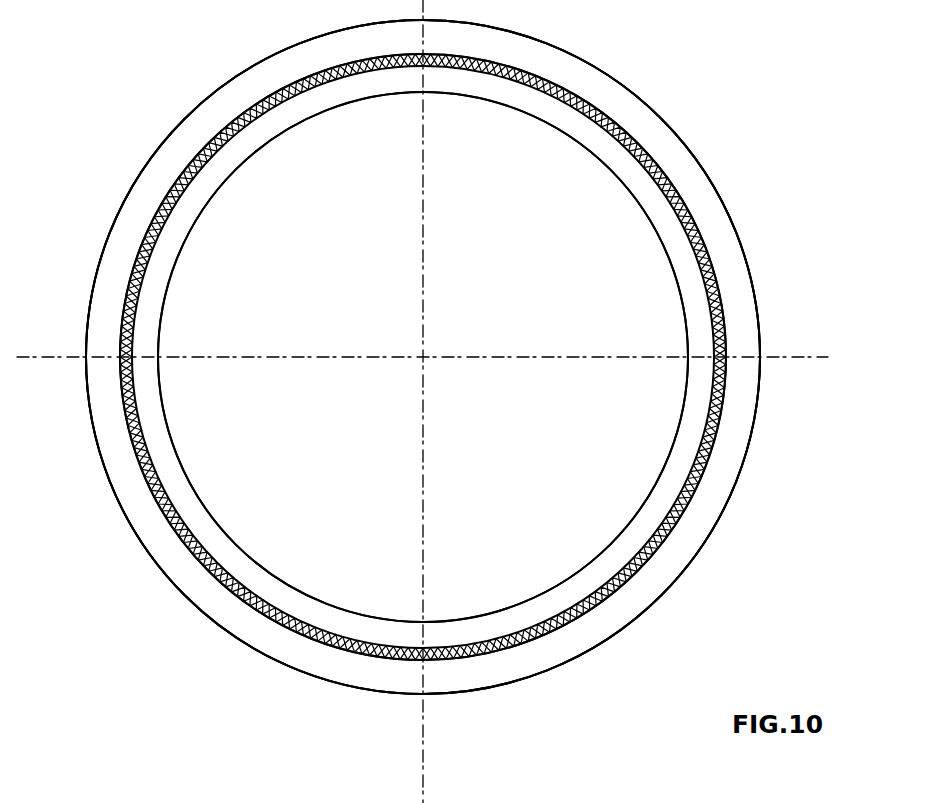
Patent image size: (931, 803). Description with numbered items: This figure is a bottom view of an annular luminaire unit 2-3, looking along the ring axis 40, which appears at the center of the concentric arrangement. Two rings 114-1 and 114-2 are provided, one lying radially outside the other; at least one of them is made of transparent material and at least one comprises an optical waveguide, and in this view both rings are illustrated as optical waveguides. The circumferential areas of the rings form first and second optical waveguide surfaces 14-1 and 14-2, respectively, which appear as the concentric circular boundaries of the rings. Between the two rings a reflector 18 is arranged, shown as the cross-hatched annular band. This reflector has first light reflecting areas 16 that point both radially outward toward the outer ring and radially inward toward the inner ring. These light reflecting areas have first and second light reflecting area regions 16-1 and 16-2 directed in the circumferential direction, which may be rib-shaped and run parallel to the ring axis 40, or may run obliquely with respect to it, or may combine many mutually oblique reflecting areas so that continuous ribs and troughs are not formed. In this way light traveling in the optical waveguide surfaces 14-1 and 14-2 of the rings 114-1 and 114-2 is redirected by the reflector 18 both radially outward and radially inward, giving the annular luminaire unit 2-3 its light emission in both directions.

The annular luminaire unit 2-3 is at (614, 45).
The first optical waveguide surface 14-1 is at (670, 170).
The second optical waveguide surface 14-2 is at (717, 188).
The first light reflecting areas 16 is at (157, 210).
The first light reflecting area region 16-1 is at (218, 128).
The second light reflecting area region 16-2 is at (202, 148).
The reflector 18 is at (593, 100).
The ring axis 40 is at (425, 357).
The ring 114-1 is at (727, 243).
The ring 114-2 is at (700, 308).